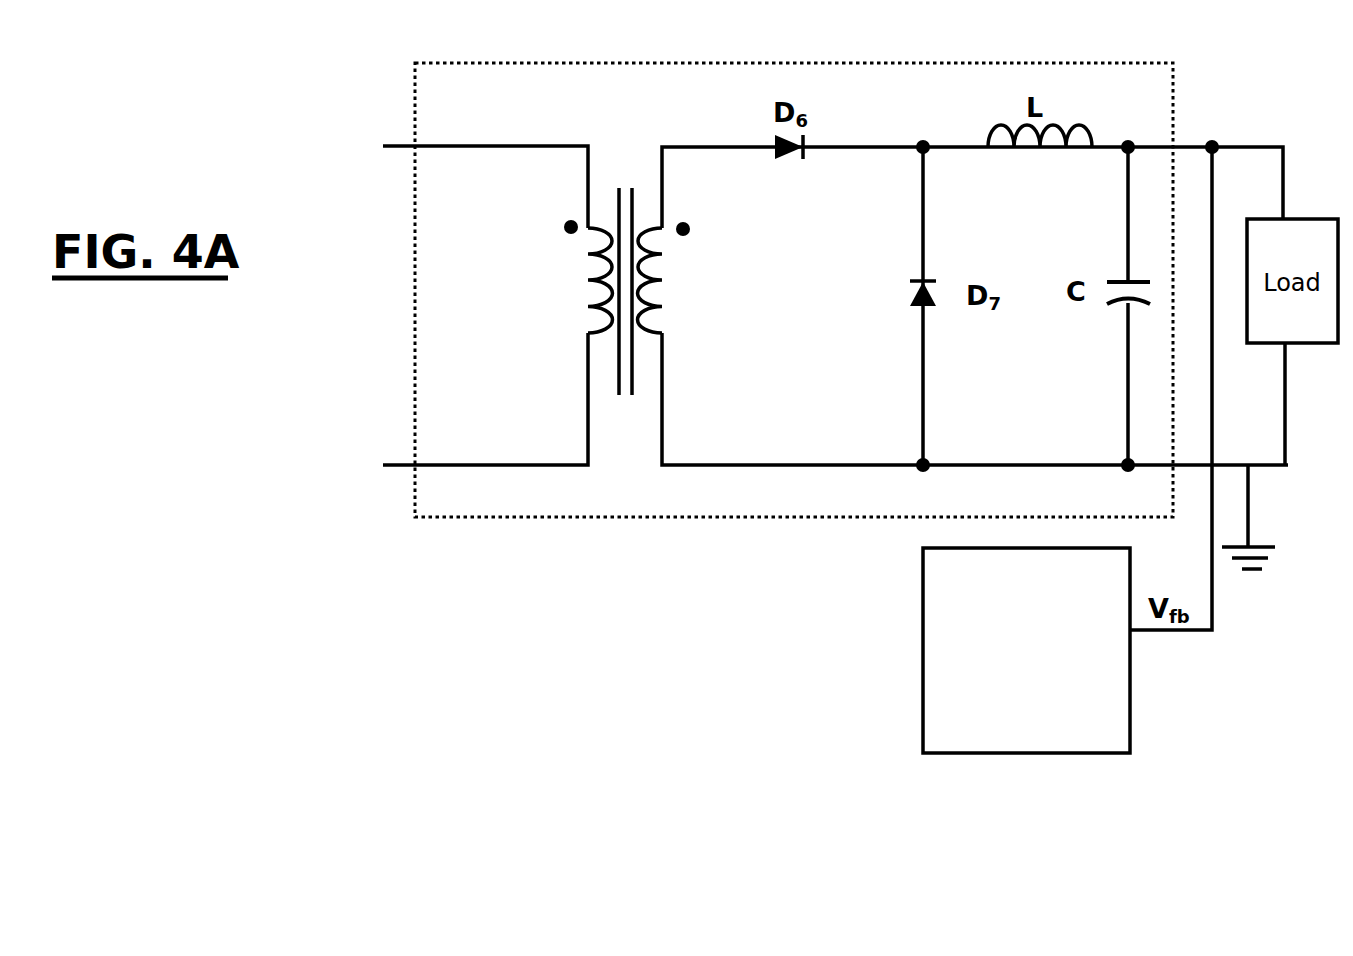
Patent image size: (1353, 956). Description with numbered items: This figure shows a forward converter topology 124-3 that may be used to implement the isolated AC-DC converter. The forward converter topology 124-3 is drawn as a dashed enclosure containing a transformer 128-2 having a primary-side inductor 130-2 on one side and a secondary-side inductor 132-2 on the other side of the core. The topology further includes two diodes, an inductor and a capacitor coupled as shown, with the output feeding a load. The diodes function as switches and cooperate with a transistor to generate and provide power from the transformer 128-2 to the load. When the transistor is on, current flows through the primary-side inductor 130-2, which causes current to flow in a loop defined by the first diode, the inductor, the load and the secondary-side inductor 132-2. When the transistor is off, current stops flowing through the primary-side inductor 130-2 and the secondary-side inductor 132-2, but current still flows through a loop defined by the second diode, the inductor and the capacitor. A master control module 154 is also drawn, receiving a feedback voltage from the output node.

The forward converter topology 124-3 is at (503, 63).
The transformer 128-2 is at (540, 215).
The primary-side inductor 130-2 is at (562, 324).
The secondary-side inductor 132-2 is at (692, 320).
The master control module 154 is at (923, 651).